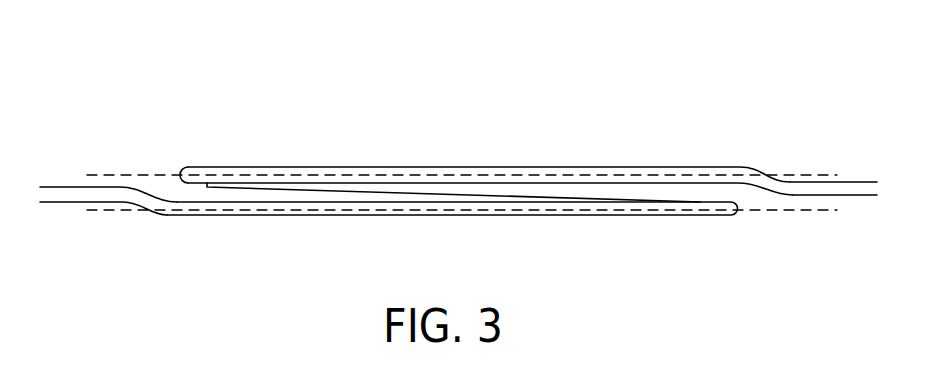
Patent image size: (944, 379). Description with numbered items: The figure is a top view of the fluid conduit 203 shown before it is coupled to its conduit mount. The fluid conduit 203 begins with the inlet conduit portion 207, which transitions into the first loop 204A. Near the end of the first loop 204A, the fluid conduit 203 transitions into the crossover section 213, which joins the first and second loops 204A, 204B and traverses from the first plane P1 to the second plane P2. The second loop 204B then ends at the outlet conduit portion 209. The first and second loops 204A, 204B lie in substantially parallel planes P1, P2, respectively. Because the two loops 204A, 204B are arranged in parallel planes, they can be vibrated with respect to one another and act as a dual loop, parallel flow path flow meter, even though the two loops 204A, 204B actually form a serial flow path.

The fluid conduit 203 is at (679, 97).
The first loop 204A is at (326, 214).
The second loop 204B is at (520, 172).
The inlet conduit portion 207 is at (67, 195).
The outlet conduit portion 209 is at (865, 188).
The crossover section 213 is at (467, 192).
The first plane P1 is at (162, 209).
The second plane P2 is at (167, 175).